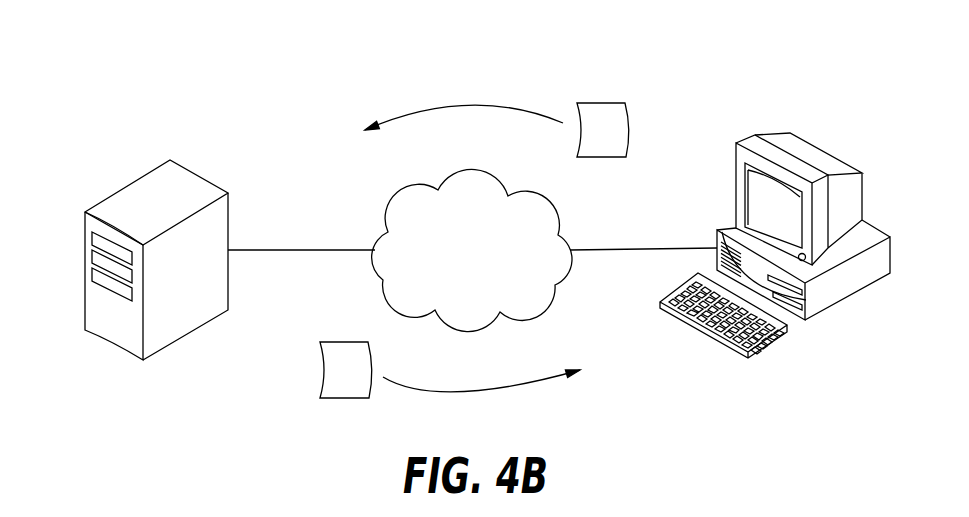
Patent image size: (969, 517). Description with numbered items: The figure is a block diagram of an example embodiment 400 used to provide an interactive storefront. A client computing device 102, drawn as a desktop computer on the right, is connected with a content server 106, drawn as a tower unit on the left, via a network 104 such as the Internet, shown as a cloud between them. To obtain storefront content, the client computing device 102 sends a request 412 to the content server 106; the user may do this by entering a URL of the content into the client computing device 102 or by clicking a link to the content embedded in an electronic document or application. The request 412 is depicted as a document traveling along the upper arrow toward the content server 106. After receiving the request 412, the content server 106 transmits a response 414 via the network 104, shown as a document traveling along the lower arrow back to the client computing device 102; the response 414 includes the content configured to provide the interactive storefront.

The system / data flow diagram 400 is at (200, 45).
The content server 106 is at (83, 268).
The network 104 is at (475, 171).
The client computing device 102 is at (863, 195).
The request 412 is at (625, 130).
The response 414 is at (320, 368).